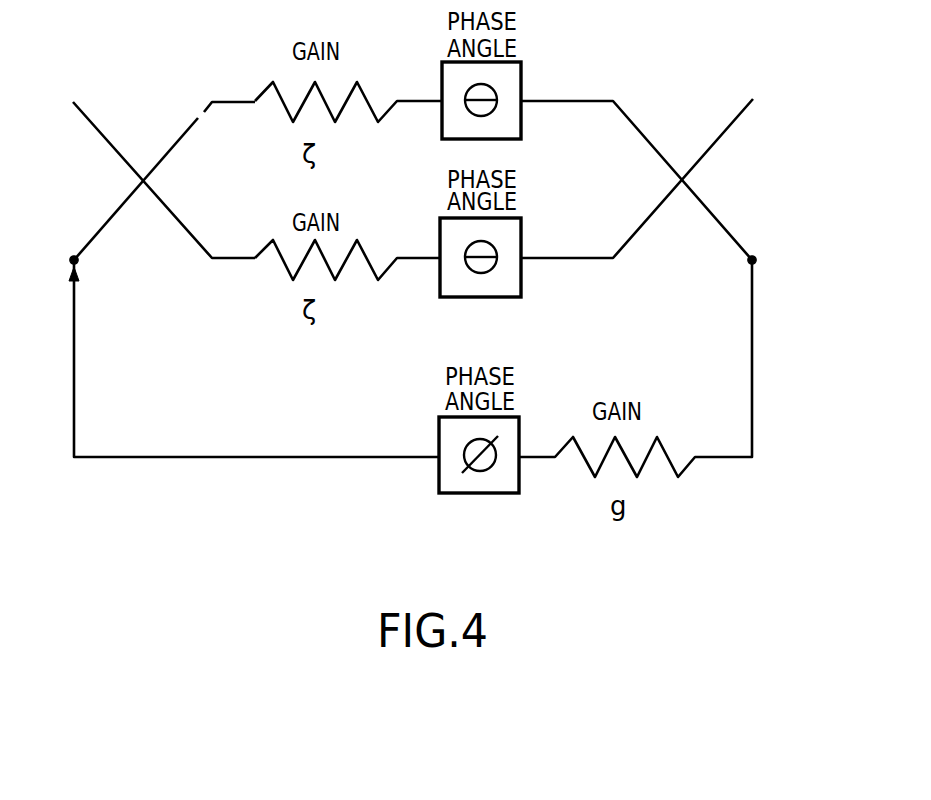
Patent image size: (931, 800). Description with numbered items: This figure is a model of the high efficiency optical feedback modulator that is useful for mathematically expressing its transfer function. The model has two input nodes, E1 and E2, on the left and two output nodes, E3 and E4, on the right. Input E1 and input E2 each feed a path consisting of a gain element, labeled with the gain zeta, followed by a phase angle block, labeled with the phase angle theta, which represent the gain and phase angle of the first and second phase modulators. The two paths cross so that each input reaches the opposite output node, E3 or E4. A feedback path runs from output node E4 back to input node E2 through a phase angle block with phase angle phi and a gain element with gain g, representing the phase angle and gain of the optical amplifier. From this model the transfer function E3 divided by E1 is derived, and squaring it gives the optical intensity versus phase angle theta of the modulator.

The input optical field E1 is at (46, 97).
The optical field at second input node E2 is at (46, 258).
The output optical field E3 is at (777, 97).
The optical field at second output node E4 is at (777, 258).